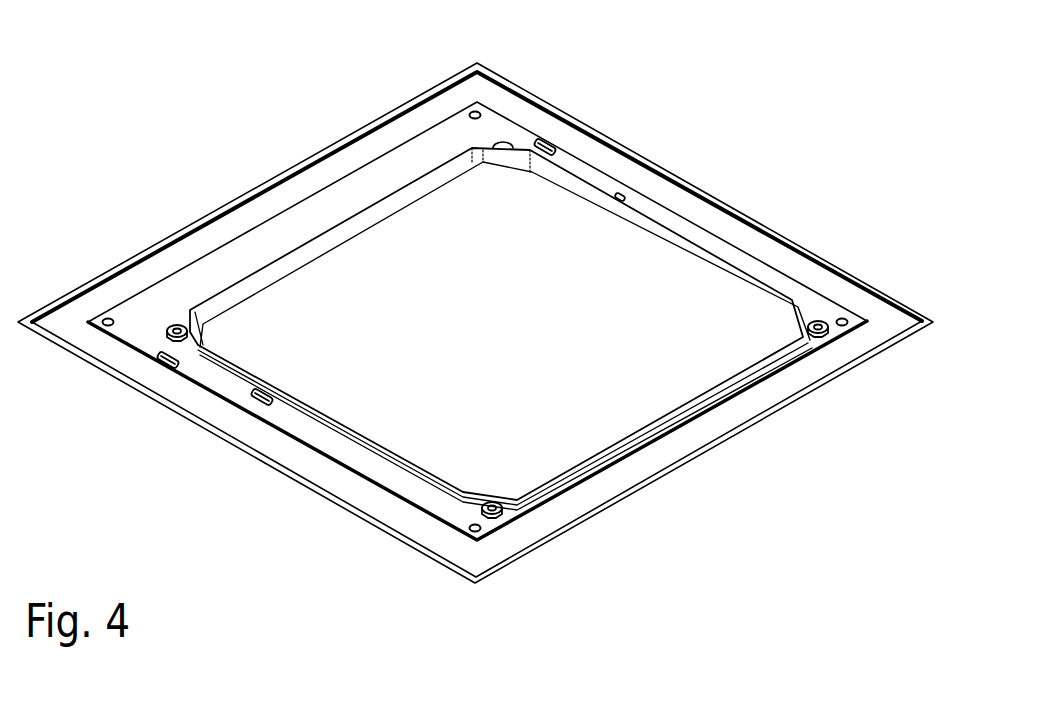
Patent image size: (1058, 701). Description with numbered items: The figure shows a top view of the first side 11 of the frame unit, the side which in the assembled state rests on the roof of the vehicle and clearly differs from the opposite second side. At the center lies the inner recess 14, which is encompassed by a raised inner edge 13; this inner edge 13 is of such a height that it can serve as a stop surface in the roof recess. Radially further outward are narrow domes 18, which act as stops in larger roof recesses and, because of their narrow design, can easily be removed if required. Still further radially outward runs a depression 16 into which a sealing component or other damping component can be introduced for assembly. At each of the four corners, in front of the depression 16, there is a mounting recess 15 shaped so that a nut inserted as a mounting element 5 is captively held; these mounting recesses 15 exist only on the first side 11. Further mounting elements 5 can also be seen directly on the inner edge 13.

The first side 11 is at (355, 155).
The raised inner edge 13 is at (340, 223).
The inner recess 14 is at (521, 310).
The mounting recess 15 is at (107, 320).
The mounting element 5 is at (175, 328).
The depression 16 is at (285, 457).
The narrow domes 18 is at (260, 399).